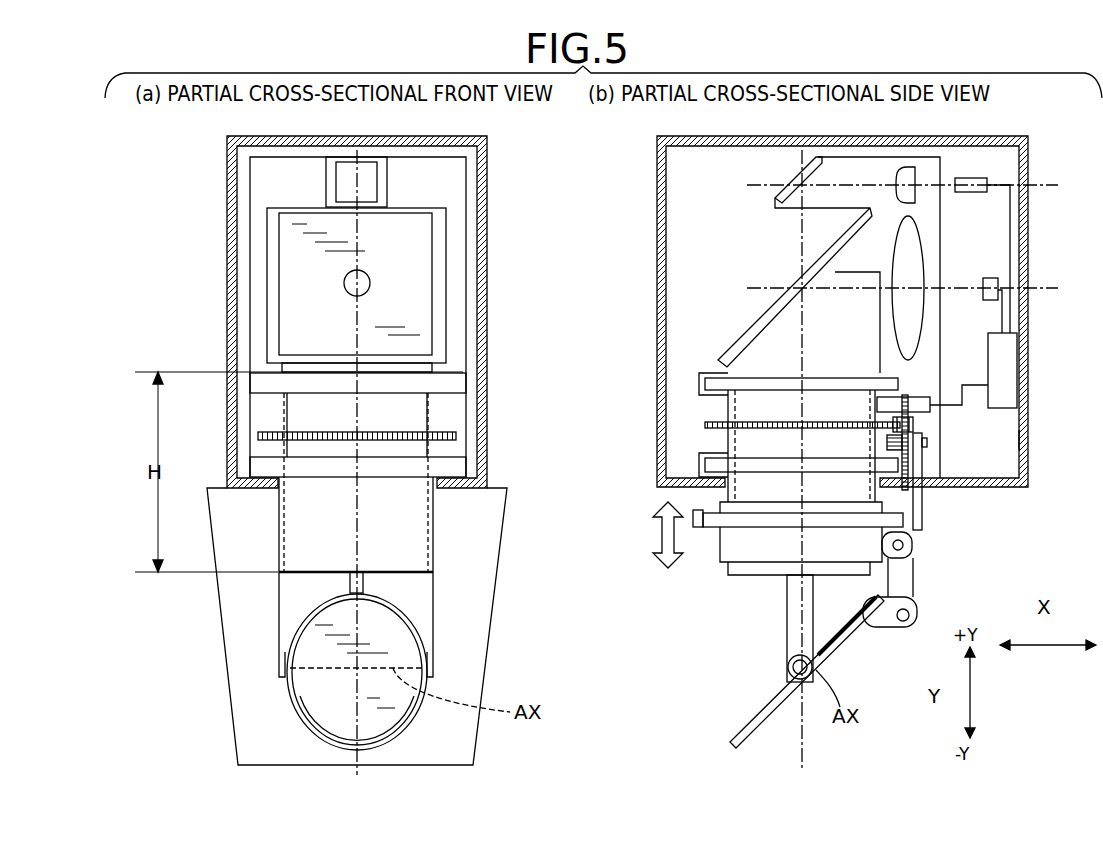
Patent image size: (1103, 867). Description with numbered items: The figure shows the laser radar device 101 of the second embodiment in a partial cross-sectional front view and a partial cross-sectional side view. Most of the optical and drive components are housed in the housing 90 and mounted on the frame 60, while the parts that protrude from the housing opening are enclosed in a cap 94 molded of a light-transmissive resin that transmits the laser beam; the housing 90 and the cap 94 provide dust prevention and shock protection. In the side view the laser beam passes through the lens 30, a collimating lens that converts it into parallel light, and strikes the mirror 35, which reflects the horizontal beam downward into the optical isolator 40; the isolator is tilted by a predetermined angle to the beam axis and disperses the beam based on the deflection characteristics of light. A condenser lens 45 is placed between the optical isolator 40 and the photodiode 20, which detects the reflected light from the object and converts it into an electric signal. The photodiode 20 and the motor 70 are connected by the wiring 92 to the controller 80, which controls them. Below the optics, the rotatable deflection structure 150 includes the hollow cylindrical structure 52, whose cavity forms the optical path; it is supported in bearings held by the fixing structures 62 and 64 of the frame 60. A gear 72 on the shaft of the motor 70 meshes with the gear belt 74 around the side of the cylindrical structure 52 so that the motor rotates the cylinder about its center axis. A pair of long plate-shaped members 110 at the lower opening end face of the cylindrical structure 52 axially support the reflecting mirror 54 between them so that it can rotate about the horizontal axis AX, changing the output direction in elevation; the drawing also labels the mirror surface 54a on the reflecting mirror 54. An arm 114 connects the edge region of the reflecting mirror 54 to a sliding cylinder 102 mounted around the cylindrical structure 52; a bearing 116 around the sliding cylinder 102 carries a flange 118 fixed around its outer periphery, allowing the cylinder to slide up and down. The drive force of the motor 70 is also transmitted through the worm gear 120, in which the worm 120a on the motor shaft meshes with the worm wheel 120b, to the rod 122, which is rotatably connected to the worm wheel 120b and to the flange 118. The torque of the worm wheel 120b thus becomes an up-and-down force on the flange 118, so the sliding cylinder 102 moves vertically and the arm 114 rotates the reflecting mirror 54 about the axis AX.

The housing 90 is at (487, 296).
The frame 60 is at (466, 340).
The fixing structure 62 is at (258, 383).
The rotatable deflection structure 150 is at (272, 418).
The cylindrical structure 52 is at (433, 403).
The gear belt 74 is at (456, 437).
The fixing structure 64 is at (260, 463).
The plate-shaped member 110 is at (283, 620).
The arm 114 is at (355, 580).
The reflecting mirror 54 is at (288, 720).
The reflecting surface 54a is at (303, 694).
The cap 94 is at (497, 630).
The laser radar device 101 is at (1018, 126).
The optical isolator 40 is at (826, 252).
The mirror 35 is at (804, 163).
The lens 30 is at (910, 167).
The condenser lens 45 is at (925, 240).
The photodiode 20 is at (990, 278).
The controller 80 is at (1019, 410).
The wiring 92 is at (1020, 440).
The motor 70 is at (903, 397).
The gear 72 is at (915, 425).
The worm gear 120 is at (1065, 526).
The worm 120a is at (920, 455).
The worm wheel 120b is at (905, 446).
The rod 122 is at (923, 508).
The flange 118 is at (708, 530).
The sliding cylinder 102 is at (757, 545).
The bearing 116 is at (670, 552).